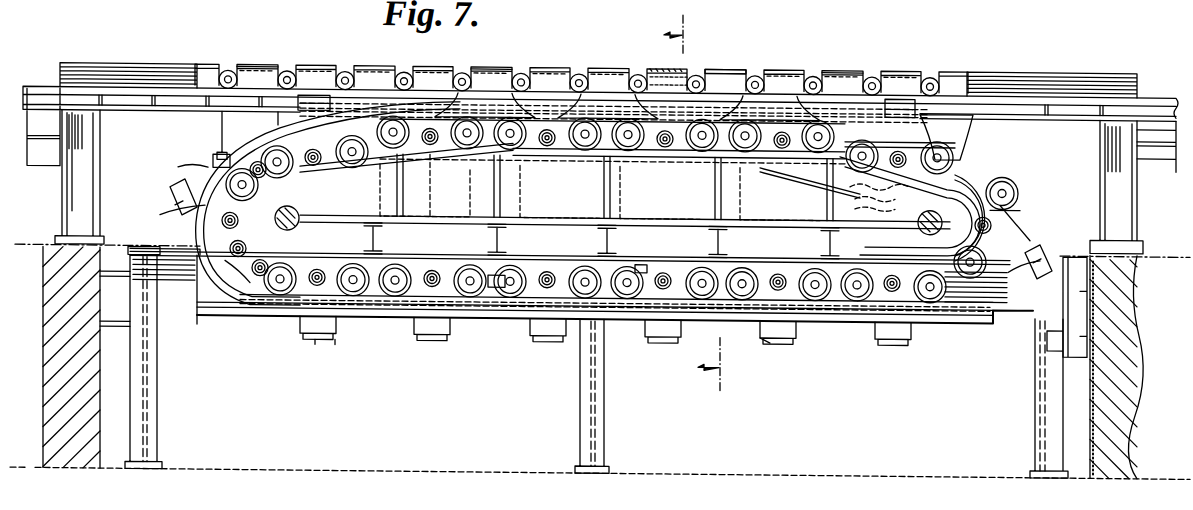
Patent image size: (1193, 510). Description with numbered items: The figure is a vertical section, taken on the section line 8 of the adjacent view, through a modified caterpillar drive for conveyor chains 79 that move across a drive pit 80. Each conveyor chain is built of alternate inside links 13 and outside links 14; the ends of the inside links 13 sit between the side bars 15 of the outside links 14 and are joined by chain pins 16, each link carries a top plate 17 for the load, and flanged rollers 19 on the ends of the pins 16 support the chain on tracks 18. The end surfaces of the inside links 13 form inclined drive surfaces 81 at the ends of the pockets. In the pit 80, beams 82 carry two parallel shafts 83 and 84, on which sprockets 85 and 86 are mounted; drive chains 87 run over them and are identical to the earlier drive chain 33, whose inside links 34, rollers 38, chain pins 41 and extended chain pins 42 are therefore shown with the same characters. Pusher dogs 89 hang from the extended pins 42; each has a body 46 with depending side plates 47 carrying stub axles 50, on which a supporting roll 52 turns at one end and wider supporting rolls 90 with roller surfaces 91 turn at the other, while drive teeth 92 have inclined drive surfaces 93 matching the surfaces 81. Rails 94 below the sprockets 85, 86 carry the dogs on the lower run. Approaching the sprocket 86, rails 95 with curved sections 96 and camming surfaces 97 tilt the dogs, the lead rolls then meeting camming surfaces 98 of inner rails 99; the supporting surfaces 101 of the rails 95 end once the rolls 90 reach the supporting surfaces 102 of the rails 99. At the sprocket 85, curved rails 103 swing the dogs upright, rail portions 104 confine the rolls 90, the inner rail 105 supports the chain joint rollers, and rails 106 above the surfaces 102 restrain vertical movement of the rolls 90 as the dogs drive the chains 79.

The section line 8— 8 is at (701, 202).
The inside links 13 is at (503, 61).
The outside links 14 is at (316, 55).
The side bars 15 is at (292, 72).
The chain pins 16 is at (358, 74).
The top plate 17 is at (243, 71).
The tracks 18 is at (137, 78).
The flanged rollers 19 is at (347, 101).
The drive chain 33 is at (243, 229).
The inside links 34 is at (215, 262).
The roller 38 is at (292, 162).
The chain pins 41 is at (267, 260).
The extended chain pins 42 is at (548, 142).
The body 46 is at (277, 115).
The side plates 47 is at (679, 262).
The stub axles 50 is at (468, 142).
The supporting roll 52 is at (273, 157).
The conveyor chains 79 is at (742, 56).
The drive pit 80 is at (600, 361).
The drive surfaces 81 is at (668, 65).
The beams 82 is at (1010, 312).
The shaft 83 is at (276, 213).
The shaft 84 is at (943, 201).
The sprockets 85 is at (375, 227).
The sprockets 86 is at (880, 188).
The drive chains 87 is at (497, 260).
The pusher dogs 89 is at (198, 168).
The supporting rolls 90 is at (583, 146).
The roller surfaces 91 is at (213, 146).
The drive teeth 92 is at (415, 92).
The drive surfaces 93 is at (175, 196).
The rails 94 is at (835, 308).
The rails 95 is at (958, 270).
The curved sections 96 is at (992, 222).
The camming surfaces 97 is at (899, 144).
The camming surfaces 98 is at (827, 166).
The rails 99 is at (698, 157).
The supporting surfaces 101 is at (790, 166).
The supporting surfaces 102 is at (653, 151).
The rails 103 is at (203, 218).
The rail portions 104 is at (440, 156).
The inner rail 105 is at (400, 164).
The rails 106 is at (606, 105).